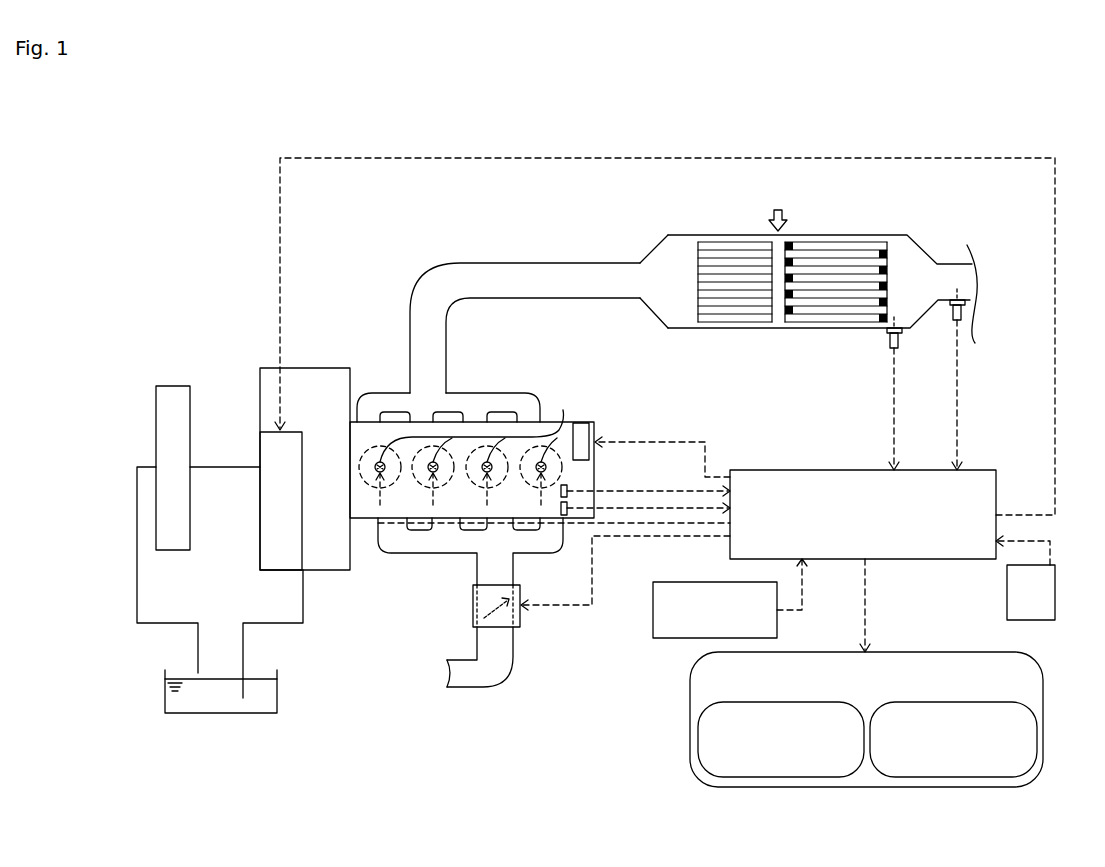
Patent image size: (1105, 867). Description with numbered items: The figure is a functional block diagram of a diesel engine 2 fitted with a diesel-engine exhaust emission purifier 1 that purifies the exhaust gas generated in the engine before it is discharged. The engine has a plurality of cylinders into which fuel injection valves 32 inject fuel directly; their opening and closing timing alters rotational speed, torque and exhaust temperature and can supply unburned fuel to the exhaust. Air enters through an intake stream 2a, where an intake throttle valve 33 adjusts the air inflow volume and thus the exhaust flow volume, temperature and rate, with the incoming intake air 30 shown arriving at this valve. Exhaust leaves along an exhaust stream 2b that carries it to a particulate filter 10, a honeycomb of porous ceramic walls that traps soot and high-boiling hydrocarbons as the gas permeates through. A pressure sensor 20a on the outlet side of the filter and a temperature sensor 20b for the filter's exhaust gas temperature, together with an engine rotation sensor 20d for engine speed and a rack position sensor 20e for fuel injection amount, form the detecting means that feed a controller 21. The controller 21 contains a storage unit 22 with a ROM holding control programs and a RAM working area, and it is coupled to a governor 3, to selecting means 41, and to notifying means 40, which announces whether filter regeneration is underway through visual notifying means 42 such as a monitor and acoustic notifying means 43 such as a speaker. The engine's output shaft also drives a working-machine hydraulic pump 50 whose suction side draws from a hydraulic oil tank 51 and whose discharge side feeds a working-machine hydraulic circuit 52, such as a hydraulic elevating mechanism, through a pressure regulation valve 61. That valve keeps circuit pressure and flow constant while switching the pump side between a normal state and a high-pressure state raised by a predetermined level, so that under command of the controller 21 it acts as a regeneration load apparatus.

The diesel-engine exhaust emission purifier 1 is at (778, 208).
The particulate filter 10 is at (836, 235).
The diesel engine 2 is at (360, 520).
The intake stream 2a is at (477, 570).
The exhaust stream 2b is at (409, 362).
The governor 3 is at (586, 422).
The fuel injection valves 32 is at (563, 410).
The intake throttle valve 33 is at (473, 605).
The intake air 30 is at (447, 640).
The pressure sensor 20a is at (898, 338).
The temperature sensor 20b is at (965, 308).
The engine rotation sensor 20d is at (568, 487).
The rack position sensor 20e is at (567, 516).
The controller 21 is at (843, 469).
The storage unit 22 is at (1050, 622).
The notifying means 40 is at (1043, 772).
The selecting means 41 is at (653, 607).
The visual notifying means 42 is at (690, 740).
The acoustic notifying means 43 is at (1043, 740).
The working-machine hydraulic pump 50 is at (306, 368).
The hydraulic oil tank 51 is at (280, 700).
The working-machine hydraulic circuit 52 is at (175, 385).
The pressure regulation valve 61 is at (272, 512).